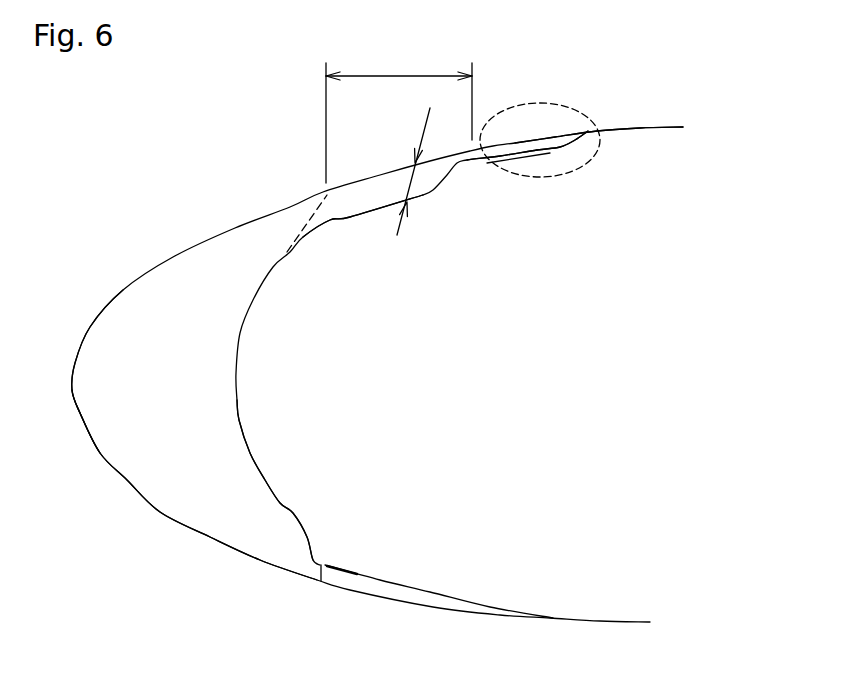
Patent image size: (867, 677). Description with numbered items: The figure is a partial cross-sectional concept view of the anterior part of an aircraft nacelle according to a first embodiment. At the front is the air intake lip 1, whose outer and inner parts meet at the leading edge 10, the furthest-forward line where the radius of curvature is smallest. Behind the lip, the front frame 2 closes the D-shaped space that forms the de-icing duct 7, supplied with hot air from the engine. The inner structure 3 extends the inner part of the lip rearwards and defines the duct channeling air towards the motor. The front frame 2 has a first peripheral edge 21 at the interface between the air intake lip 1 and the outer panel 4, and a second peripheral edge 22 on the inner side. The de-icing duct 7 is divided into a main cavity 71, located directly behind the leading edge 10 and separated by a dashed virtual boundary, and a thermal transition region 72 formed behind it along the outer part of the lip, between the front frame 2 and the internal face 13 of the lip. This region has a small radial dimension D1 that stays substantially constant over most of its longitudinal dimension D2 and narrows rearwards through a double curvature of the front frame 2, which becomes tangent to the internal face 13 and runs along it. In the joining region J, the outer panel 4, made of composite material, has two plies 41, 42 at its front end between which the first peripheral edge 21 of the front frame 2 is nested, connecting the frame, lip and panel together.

The air intake lip 1 is at (234, 224).
The front frame 2 is at (237, 397).
The inner structure 3 is at (430, 597).
The outer panel 4 is at (634, 126).
The de-icing duct 7 is at (175, 493).
The leading edge 10 is at (73, 374).
The internal face 13 is at (338, 186).
The first peripheral edge 21 is at (533, 153).
The second peripheral edge 22 is at (346, 568).
The ply 41 is at (527, 140).
The ply 42 is at (512, 160).
The main cavity 71 is at (147, 465).
The thermal transition region 72 is at (380, 186).
The joining region J is at (594, 153).
The radial dimension D1 is at (408, 169).
The longitudinal dimension D2 is at (399, 116).